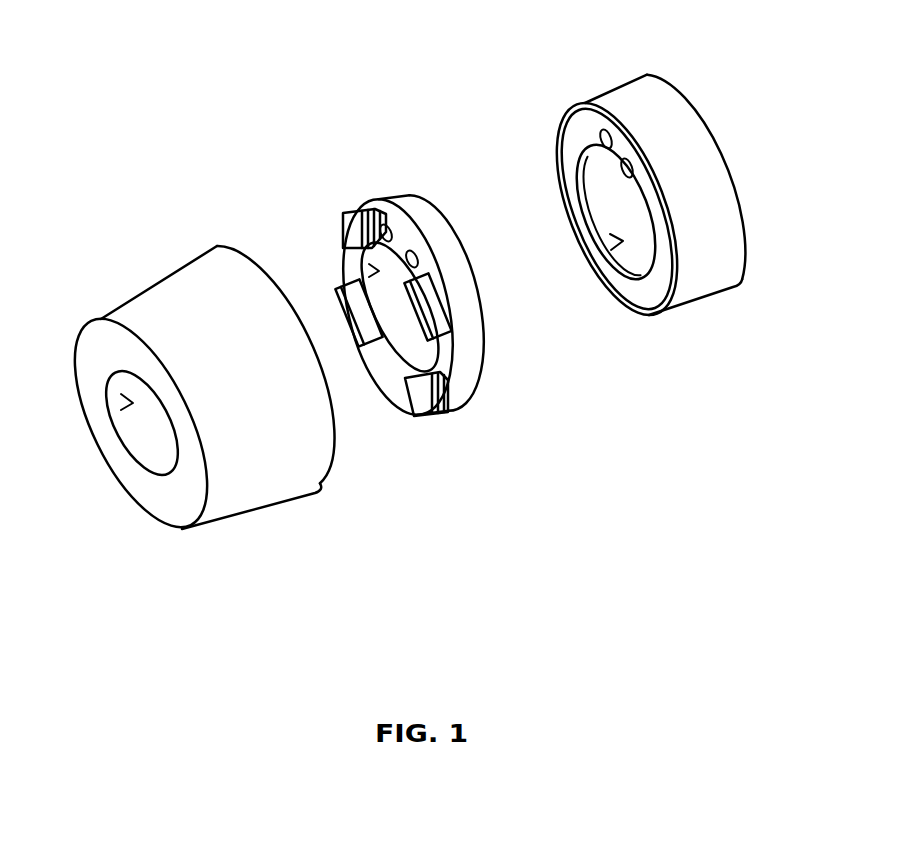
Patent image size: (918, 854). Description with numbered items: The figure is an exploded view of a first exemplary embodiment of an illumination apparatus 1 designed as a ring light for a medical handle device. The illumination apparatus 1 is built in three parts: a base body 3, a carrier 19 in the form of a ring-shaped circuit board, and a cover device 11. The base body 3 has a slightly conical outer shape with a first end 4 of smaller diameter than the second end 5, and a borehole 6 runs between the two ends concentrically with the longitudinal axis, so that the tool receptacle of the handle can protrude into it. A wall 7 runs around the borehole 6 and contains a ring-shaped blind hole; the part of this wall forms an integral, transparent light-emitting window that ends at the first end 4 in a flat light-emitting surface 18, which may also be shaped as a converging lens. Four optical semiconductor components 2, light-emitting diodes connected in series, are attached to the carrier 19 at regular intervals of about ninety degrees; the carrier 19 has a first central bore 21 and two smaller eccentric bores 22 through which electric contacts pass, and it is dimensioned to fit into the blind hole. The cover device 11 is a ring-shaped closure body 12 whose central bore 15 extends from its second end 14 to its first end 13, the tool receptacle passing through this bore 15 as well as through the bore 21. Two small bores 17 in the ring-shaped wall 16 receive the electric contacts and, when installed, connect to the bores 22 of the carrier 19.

The illumination apparatus 1 is at (112, 102).
The optical semiconductor components 2 is at (348, 214).
The base body 3 is at (280, 536).
The first end 4 is at (118, 312).
The second end 5 is at (217, 246).
The borehole 6 is at (132, 403).
The wall 7 is at (345, 455).
The cover device 11 is at (746, 325).
The closure body 12 is at (713, 213).
The first end 13 is at (585, 103).
The second end 14 is at (648, 74).
The central bore 15 is at (620, 243).
The ring-shaped wall 16 is at (708, 102).
The small bores 17 is at (622, 162).
The light-emitting surface 18 is at (168, 505).
The carrier 19 is at (470, 360).
The first central bore 21 is at (378, 270).
The eccentric bores 22 is at (411, 252).